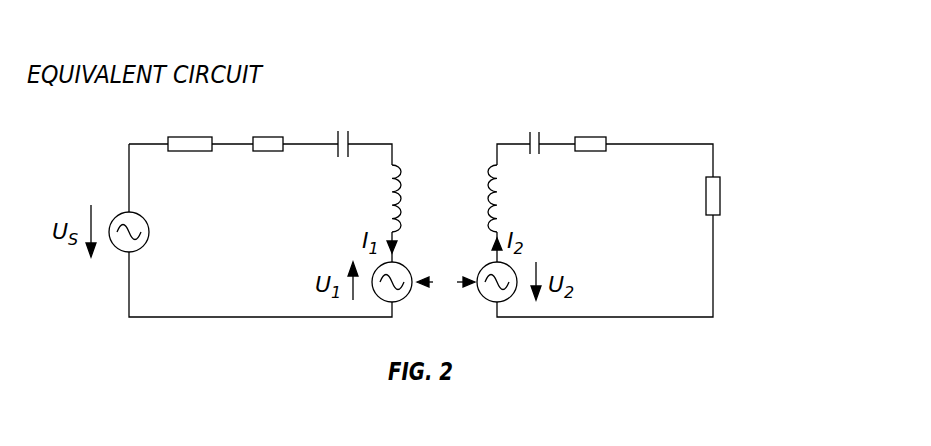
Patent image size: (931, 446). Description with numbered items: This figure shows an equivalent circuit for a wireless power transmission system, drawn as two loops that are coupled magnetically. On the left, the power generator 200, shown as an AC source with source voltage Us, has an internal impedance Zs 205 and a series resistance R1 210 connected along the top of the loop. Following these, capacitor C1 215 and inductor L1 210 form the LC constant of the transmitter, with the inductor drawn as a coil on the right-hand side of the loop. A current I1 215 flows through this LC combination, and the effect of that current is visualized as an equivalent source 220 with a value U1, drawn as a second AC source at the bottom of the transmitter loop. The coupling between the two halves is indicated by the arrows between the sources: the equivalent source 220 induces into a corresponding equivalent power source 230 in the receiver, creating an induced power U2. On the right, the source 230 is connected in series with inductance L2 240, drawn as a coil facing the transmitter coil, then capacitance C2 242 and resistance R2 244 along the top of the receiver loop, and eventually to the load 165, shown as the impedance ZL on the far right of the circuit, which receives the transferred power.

The power generator 200 is at (150, 233).
The internal impedance Zs 205 is at (190, 153).
The series resistance R1 / inductor L1 210 is at (268, 153).
The capacitor C1 / current I1 215 is at (340, 157).
The equivalent source U1 220 is at (381, 301).
The equivalent power source U2 230 is at (507, 302).
The inductance L2 240 is at (503, 211).
The capacitance C2 242 is at (533, 156).
The resistance R2 244 is at (594, 152).
The load 165 is at (722, 212).